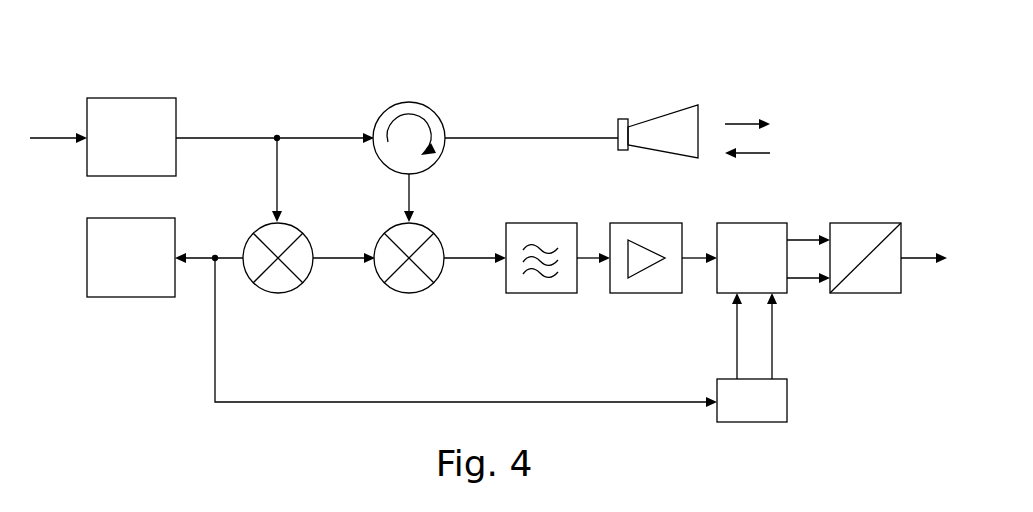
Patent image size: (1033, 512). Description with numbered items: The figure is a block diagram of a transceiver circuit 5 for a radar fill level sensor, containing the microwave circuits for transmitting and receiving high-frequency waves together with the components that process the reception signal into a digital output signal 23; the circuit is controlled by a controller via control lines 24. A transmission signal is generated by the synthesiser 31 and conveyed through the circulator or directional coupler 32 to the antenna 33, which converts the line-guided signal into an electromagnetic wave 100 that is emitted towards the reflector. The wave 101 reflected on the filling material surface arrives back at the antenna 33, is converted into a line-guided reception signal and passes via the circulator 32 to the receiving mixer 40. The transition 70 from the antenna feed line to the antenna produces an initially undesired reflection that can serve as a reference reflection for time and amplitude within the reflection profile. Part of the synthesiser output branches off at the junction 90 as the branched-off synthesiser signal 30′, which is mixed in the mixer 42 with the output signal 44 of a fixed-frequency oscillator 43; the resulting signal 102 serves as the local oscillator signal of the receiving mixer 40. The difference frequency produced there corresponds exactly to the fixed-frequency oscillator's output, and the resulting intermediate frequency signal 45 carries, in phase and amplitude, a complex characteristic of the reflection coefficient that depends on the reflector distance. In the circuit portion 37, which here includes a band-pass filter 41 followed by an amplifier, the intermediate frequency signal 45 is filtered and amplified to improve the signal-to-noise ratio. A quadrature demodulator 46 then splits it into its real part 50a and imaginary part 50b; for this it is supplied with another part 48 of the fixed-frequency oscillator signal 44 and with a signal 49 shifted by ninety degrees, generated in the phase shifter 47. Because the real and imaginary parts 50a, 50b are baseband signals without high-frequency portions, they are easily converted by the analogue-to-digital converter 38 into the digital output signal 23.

The transceiver circuit 5 is at (347, 62).
The output signal 23 is at (910, 256).
The control lines 24 is at (61, 137).
The branched-off synthesiser signal 30′ is at (215, 137).
The synthesiser 31 is at (121, 98).
The circulator or directional coupler 32 is at (393, 104).
The antenna 33 is at (653, 115).
The circuit portion 37 is at (632, 223).
The analog-to-digital converter 38 is at (855, 223).
The receiving mixer 40 is at (394, 225).
The filter 41 is at (545, 223).
The mixer 42 is at (260, 292).
The fixed-frequency oscillator 43 is at (105, 298).
The output signal of the fixed-frequency oscillator 44 is at (227, 256).
The intermediate frequency signal 45 is at (480, 262).
The quadrature demodulator 46 is at (732, 223).
The phase shifter 47 is at (788, 392).
The part of the output signal of the fixed-frequency oscillator 48 is at (736, 340).
The phase-shifted signal 49 is at (774, 344).
The real part 50a is at (808, 238).
The imaginary part 50b is at (806, 280).
The transition from the antenna feed line to the antenna 70 is at (617, 130).
The junction 90 is at (277, 137).
The electromagnetic wave 100 is at (740, 123).
The reflected wave 101 is at (412, 183).
The mixed signal 102 is at (338, 262).